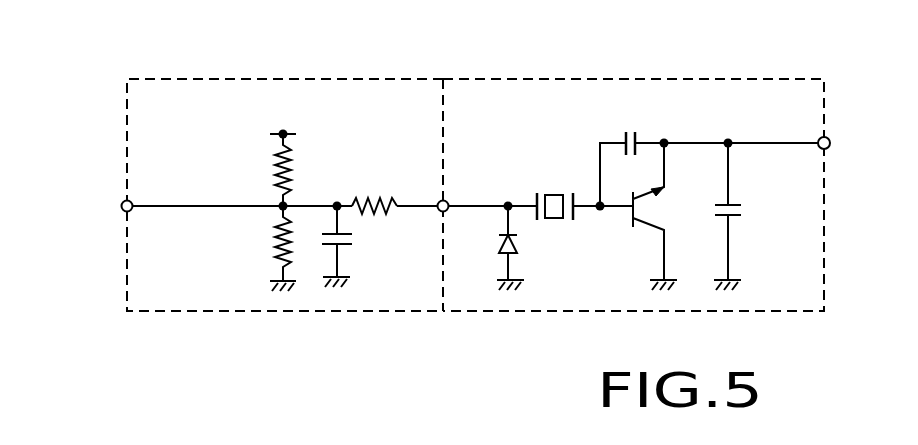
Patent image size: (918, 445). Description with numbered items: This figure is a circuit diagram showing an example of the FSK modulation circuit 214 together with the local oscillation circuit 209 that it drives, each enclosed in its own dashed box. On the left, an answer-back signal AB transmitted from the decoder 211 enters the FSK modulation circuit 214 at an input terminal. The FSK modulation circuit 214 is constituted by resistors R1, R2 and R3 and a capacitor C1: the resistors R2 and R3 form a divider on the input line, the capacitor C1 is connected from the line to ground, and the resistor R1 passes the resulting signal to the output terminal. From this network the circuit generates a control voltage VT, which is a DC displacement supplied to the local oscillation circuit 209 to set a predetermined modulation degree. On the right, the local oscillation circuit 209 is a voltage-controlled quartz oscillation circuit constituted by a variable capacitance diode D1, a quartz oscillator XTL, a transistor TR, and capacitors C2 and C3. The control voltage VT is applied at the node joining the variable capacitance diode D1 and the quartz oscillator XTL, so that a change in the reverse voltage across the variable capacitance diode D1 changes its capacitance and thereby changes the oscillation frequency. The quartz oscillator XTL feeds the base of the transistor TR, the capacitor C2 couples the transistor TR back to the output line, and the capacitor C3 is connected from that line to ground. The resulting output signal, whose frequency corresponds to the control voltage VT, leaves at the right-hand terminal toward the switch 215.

The FSK modulation circuit 214 is at (256, 79).
The local oscillation circuit 209 is at (574, 79).
The decoder 211 is at (82, 161).
The switch 215 is at (863, 185).
The resistor R1 is at (374, 189).
The resistor R2 is at (271, 168).
The resistor R3 is at (271, 247).
The capacitor C1 is at (348, 245).
The capacitor C2 is at (634, 128).
The capacitor C3 is at (740, 216).
The variable capacitance diode D1 is at (499, 248).
The quartz oscillator XTL is at (555, 190).
The transistor TR is at (658, 216).
The control voltage VT is at (509, 191).
The answer-back signal AB is at (103, 204).